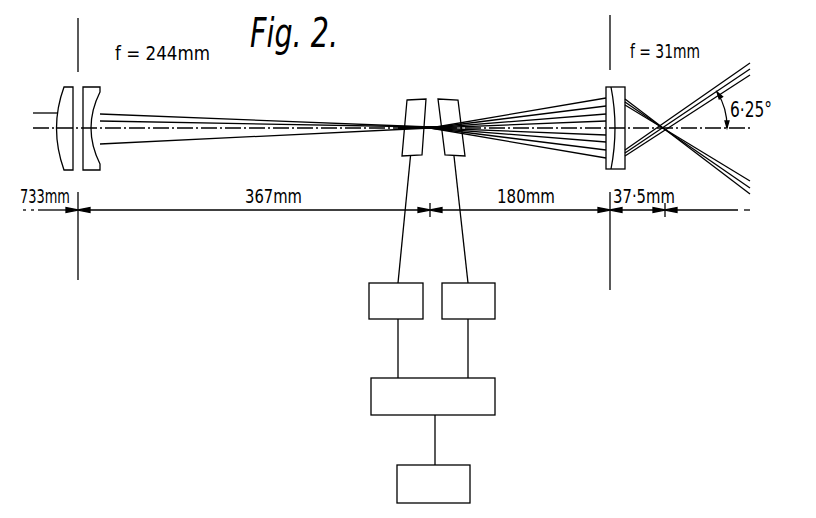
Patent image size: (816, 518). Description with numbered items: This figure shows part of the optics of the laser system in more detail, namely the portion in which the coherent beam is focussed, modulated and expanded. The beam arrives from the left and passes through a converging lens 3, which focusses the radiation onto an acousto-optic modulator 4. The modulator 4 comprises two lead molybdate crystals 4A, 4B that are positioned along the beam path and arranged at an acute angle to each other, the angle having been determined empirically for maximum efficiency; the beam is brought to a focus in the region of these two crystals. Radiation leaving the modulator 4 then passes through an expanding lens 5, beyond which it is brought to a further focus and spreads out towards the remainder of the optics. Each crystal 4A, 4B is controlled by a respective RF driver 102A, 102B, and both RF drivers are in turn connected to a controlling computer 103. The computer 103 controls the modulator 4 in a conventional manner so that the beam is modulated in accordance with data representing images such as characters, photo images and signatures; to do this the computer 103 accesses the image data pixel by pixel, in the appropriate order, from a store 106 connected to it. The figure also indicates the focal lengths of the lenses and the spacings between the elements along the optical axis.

The converging lens 3 is at (53, 68).
The acousto-optic modulator 4 is at (424, 150).
The lead molybdate crystal 4A is at (406, 147).
The lead molybdate crystal 4B is at (457, 152).
The expanding lens 5 is at (603, 76).
The RF driver 102A is at (371, 297).
The RF driver 102B is at (488, 303).
The controlling computer 103 is at (490, 401).
The store 106 is at (470, 497).